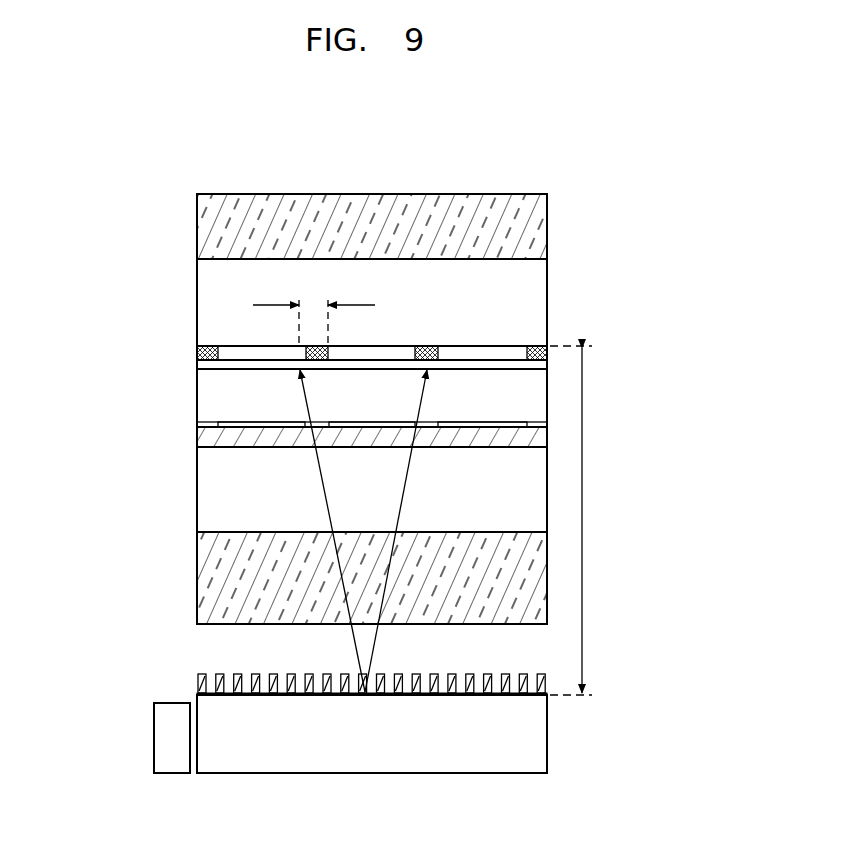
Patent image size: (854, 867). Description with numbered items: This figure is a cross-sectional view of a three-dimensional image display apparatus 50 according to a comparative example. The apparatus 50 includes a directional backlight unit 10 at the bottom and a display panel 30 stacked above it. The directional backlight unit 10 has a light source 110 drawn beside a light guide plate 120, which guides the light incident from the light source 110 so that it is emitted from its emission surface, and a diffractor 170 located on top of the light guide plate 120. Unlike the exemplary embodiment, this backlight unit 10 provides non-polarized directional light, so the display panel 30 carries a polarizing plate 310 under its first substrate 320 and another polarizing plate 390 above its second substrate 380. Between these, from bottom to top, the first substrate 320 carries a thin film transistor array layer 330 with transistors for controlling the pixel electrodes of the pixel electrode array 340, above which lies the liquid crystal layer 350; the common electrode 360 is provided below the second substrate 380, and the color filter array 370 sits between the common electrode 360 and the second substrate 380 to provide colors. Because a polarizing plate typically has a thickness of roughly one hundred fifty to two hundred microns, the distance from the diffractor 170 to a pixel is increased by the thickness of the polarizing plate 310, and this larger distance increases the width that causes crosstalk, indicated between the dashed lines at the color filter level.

The 3D image display apparatus 50 is at (612, 178).
The display panel 30 is at (616, 194).
The directional backlight unit 10 is at (616, 674).
The polarizing plate 390 is at (200, 226).
The second substrate 380 is at (200, 299).
The color filter array 370 is at (196, 351).
The common electrode 360 is at (200, 362).
The liquid crystal layer 350 is at (200, 389).
The pixel electrode array 340 is at (216, 424).
The thin film transistor array layer 330 is at (200, 440).
The first substrate 320 is at (200, 483).
The polarizing plate 310 is at (200, 567).
The diffractor 170 is at (197, 680).
The light guide plate 120 is at (378, 776).
The light source 110 is at (171, 766).